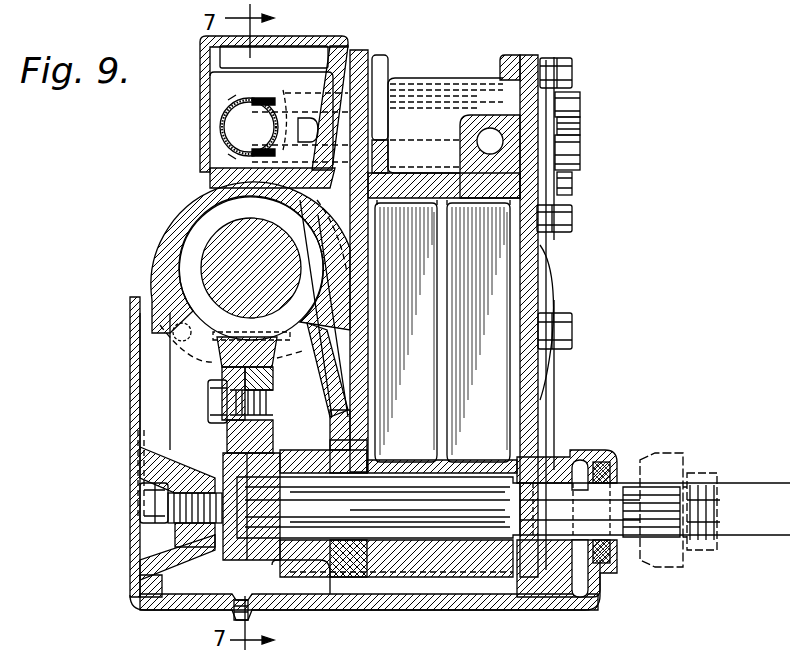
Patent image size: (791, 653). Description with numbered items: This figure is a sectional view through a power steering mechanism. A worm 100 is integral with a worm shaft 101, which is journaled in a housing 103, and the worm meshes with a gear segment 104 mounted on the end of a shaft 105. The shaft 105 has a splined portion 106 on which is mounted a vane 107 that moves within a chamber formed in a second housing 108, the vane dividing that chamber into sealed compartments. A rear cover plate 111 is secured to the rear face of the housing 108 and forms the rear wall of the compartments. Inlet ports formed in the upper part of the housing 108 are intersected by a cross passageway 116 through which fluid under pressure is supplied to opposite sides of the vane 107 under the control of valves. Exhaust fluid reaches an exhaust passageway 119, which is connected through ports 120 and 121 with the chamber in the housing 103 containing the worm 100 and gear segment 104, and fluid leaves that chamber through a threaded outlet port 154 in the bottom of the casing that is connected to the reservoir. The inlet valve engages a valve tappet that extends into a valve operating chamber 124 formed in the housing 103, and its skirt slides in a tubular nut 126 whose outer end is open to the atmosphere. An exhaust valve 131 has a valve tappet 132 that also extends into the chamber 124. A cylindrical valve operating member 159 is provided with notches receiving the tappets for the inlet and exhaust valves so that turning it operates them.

The worm 100 is at (183, 258).
The worm shaft 101 is at (207, 243).
The housing 103 is at (208, 143).
The gear segment 104 is at (207, 440).
The shaft 105 is at (347, 563).
The splined portion 106 is at (493, 493).
The vane 107 is at (498, 313).
The second housing 108 is at (445, 80).
The rear cover plate 111 is at (530, 56).
The cross passageway 116 is at (563, 127).
The exhaust passageway 119 is at (368, 95).
The port 120 is at (347, 277).
The port 121 is at (330, 380).
The valve operating chamber 124 is at (310, 58).
The tubular nut 126 is at (575, 100).
The exhaust valve 131 is at (657, 553).
The valve tappet 132 is at (274, 58).
The threaded outlet port 154 is at (257, 613).
The cylindrical valve operating member 159 is at (220, 118).